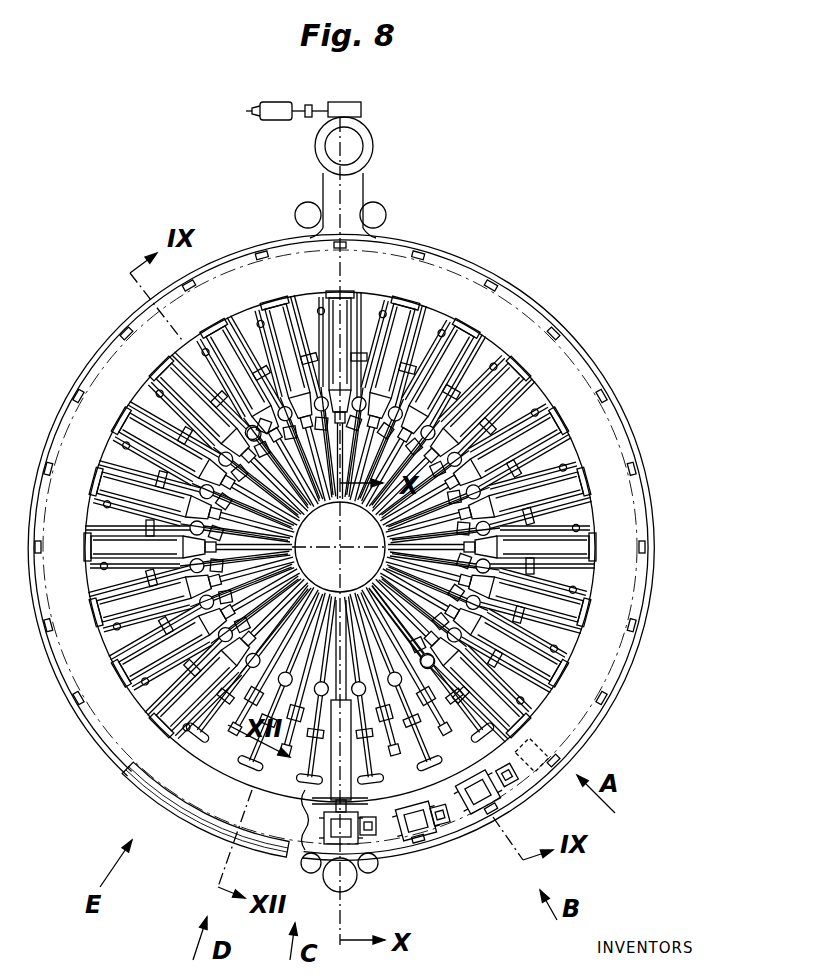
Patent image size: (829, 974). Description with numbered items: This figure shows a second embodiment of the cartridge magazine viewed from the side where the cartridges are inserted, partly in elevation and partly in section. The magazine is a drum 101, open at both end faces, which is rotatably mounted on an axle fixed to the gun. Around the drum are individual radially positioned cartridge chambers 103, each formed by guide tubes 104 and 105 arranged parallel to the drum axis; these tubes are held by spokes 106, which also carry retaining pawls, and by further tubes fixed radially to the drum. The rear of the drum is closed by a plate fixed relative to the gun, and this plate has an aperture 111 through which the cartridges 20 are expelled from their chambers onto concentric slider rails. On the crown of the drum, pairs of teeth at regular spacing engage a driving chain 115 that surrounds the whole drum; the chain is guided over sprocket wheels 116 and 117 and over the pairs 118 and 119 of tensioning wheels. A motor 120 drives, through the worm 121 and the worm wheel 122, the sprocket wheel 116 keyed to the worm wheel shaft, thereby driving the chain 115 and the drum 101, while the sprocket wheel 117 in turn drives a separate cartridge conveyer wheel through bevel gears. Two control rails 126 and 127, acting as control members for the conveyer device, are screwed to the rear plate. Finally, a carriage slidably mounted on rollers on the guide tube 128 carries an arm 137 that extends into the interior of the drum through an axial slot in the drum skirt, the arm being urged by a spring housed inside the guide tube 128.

The cartridges 20 is at (470, 720).
The drum 101 is at (482, 298).
The cartridge chambers 103 is at (152, 382).
The guide tube 104 is at (205, 430).
The guide tube 105 is at (125, 428).
The spokes 106 is at (245, 430).
The aperture 111 is at (300, 798).
The driving chain 115 is at (364, 177).
The sprocket wheel 116 is at (362, 147).
The sprocket wheel 117 is at (350, 885).
The pair of tensioning wheels 118 is at (363, 206).
The pair of tensioning wheels 119 is at (311, 873).
The motor 120 is at (280, 122).
The worm 121 is at (362, 106).
The worm wheel 122 is at (370, 133).
The control rail 126 is at (547, 748).
The control rail 127 is at (190, 832).
The guide tube 128 is at (433, 837).
The arm 137 is at (233, 720).